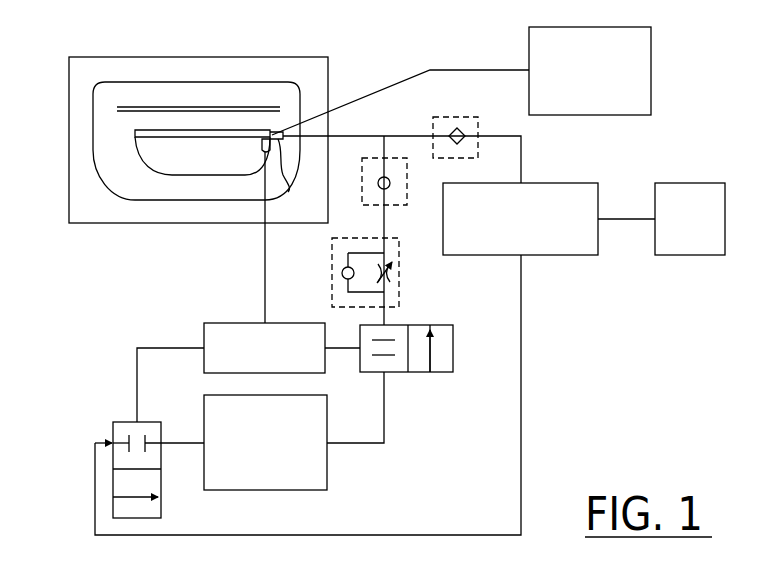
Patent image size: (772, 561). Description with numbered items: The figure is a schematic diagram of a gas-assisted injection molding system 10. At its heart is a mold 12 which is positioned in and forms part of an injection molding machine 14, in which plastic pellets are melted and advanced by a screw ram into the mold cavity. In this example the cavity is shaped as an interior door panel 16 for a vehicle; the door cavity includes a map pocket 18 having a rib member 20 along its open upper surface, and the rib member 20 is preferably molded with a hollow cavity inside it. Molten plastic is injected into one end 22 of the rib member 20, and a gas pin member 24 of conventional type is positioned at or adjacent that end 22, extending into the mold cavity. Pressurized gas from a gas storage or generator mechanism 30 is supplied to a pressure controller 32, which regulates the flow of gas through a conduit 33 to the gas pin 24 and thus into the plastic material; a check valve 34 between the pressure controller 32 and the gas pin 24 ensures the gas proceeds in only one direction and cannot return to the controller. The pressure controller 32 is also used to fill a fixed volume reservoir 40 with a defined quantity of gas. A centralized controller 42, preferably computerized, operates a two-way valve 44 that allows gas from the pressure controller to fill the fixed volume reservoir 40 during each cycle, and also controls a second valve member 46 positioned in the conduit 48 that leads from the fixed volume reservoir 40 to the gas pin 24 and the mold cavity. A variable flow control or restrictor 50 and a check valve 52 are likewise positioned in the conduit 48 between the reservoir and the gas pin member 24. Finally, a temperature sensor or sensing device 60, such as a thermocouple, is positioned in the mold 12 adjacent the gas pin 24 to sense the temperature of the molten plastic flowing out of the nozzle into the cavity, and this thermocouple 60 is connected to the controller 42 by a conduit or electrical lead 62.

The system 10 is at (92, 302).
The mold 12 is at (328, 57).
The injection molding machine 14 is at (651, 75).
The interior door panel 16 is at (167, 88).
The map pocket 18 is at (167, 167).
The rib member 20 is at (207, 133).
The end of the rib member 22 is at (272, 135).
The gas pin member 24 is at (300, 177).
The gas storage or generator mechanism 30 is at (697, 183).
The pressure controller 32 is at (552, 183).
The conduit 33 is at (521, 147).
The check valve 34 is at (460, 117).
The fixed volume reservoir 40 is at (327, 470).
The centralized controller 42 is at (233, 323).
The two-way valve 44 is at (113, 482).
The second valve member 46 is at (453, 357).
The conduit 48 is at (386, 410).
The variable flow control or restrictor 50 is at (400, 283).
The check valve 52 is at (407, 200).
The temperature sensor or sensing device 60 is at (262, 146).
The conduit or electrical lead 62 is at (259, 258).